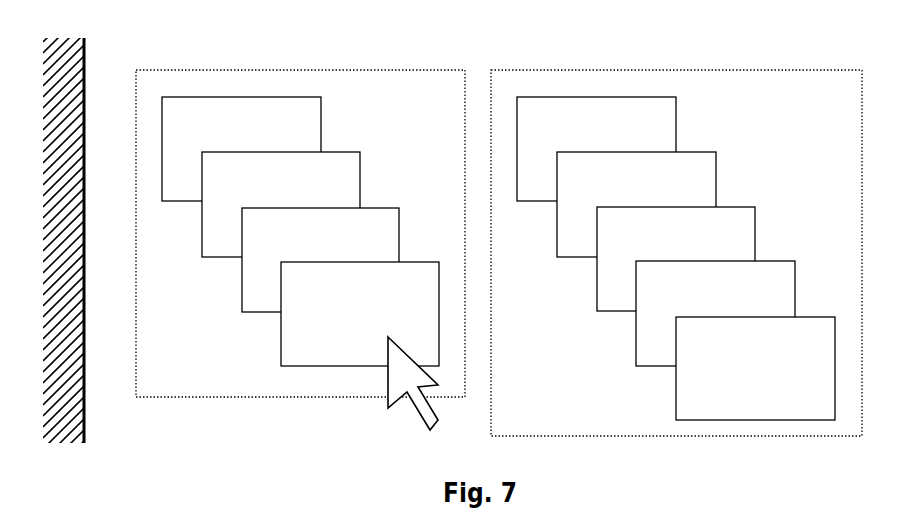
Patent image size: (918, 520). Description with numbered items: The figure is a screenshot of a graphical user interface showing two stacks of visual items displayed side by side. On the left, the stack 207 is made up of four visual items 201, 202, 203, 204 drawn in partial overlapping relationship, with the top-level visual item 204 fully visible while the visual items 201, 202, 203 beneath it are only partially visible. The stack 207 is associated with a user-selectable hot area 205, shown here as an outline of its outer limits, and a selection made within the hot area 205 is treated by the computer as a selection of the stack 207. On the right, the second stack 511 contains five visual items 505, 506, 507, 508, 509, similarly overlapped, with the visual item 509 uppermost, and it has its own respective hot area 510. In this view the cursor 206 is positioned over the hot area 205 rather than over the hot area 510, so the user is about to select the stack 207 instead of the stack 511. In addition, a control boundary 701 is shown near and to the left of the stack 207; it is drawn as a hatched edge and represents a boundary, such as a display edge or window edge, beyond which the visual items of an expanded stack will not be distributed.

The visual item 201 is at (293, 97).
The visual item 202 is at (347, 153).
The visual item 203 is at (386, 208).
The visual item 204 is at (427, 262).
The hot area 205 is at (173, 383).
The cursor 206 is at (418, 430).
The stack 207 is at (192, 87).
The visual item 505 is at (648, 97).
The visual item 506 is at (701, 152).
The visual item 507 is at (742, 207).
The visual item 508 is at (782, 261).
The visual item 509 is at (832, 317).
The hot area 510 is at (559, 383).
The second stack 511 is at (557, 87).
The control boundary 701 is at (86, 428).